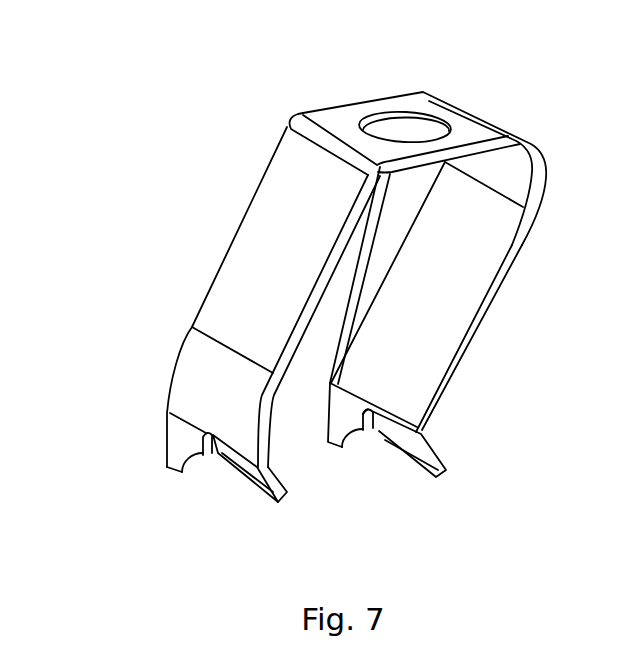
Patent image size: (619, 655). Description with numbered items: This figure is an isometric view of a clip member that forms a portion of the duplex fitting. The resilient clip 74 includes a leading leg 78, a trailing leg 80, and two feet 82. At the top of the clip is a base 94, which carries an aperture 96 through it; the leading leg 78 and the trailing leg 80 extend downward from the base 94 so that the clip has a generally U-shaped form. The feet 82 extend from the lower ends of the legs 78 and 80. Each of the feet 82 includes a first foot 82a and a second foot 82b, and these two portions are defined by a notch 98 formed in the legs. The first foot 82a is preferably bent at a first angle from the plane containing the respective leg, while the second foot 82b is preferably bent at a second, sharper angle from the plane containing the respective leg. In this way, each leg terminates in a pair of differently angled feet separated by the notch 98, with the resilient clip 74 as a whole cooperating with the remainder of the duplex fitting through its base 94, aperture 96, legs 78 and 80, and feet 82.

The resilient clip 74 is at (133, 166).
The leading leg 78 is at (290, 262).
The trailing leg 80 is at (420, 300).
The feet 82 is at (132, 430).
The first foot 82a is at (172, 466).
The second foot 82b is at (287, 500).
The base 94 is at (467, 133).
The aperture 96 is at (398, 132).
The notch 98 is at (380, 440).